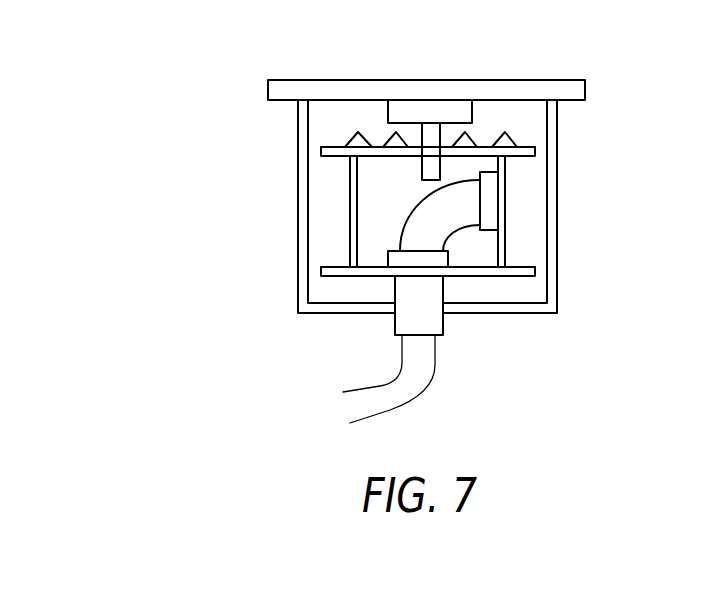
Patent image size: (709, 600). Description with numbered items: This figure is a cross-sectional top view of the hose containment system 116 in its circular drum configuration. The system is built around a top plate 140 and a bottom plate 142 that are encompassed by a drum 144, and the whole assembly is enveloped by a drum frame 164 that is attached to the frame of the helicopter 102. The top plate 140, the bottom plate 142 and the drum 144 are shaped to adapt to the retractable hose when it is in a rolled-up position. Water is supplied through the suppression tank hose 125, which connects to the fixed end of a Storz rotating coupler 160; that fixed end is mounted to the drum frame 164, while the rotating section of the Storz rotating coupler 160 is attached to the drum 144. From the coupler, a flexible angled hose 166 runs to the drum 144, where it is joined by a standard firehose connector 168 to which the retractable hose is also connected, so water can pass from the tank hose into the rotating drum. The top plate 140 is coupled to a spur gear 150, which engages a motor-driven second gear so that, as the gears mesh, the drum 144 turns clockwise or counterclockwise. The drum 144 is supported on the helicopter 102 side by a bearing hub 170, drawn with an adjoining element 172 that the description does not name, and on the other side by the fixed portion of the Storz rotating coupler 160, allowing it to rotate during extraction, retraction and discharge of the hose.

The helicopter 102 is at (280, 87).
The hose containment system 116 is at (252, 267).
The suppression tank hose 125 is at (413, 385).
The top plate 140 is at (325, 158).
The bottom plate 142 is at (338, 277).
The drum 144 is at (480, 163).
The spur gear 150 is at (347, 139).
The Storz rotating coupler 160 is at (423, 327).
The drum frame 164 is at (548, 313).
The flexible angled hose 166 is at (425, 208).
The standard firehose connector 168 is at (488, 215).
The bearing HUB 170 is at (463, 112).
The stem 172 is at (427, 132).